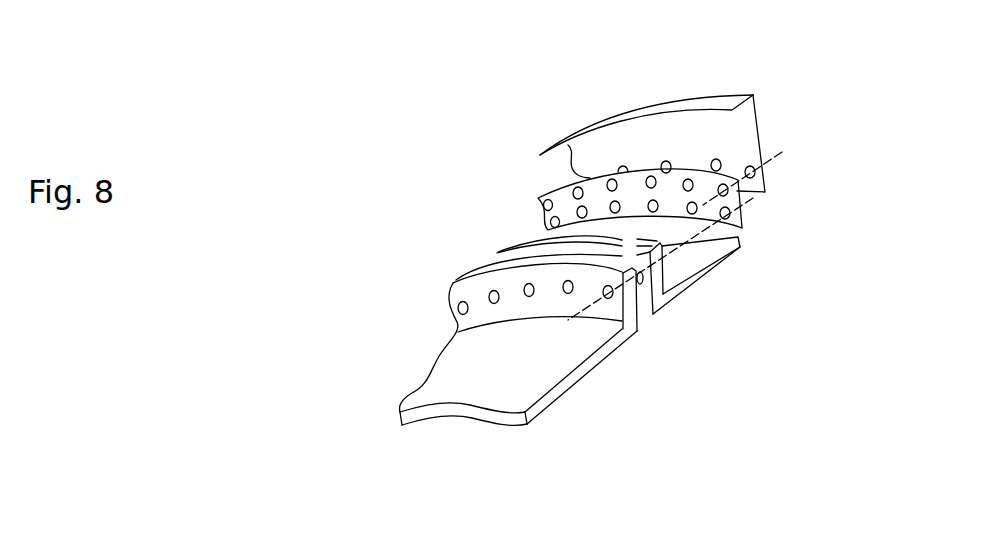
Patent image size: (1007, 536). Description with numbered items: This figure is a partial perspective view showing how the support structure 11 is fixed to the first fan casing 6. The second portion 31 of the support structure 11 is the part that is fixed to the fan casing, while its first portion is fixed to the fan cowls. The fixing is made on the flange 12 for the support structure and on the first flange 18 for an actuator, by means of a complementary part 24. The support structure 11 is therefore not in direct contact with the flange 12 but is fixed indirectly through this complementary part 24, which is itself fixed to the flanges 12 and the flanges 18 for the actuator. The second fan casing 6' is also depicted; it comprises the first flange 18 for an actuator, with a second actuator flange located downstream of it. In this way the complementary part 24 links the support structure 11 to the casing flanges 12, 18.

The first fan casing 6 is at (529, 371).
The second fan casing 6' is at (728, 285).
The support structure 11 is at (670, 78).
The flange for the support structure 12 is at (639, 350).
The first flange for an actuator 18 is at (672, 325).
The complementary part 24 is at (527, 196).
The second portion of the support structure 31 is at (782, 181).